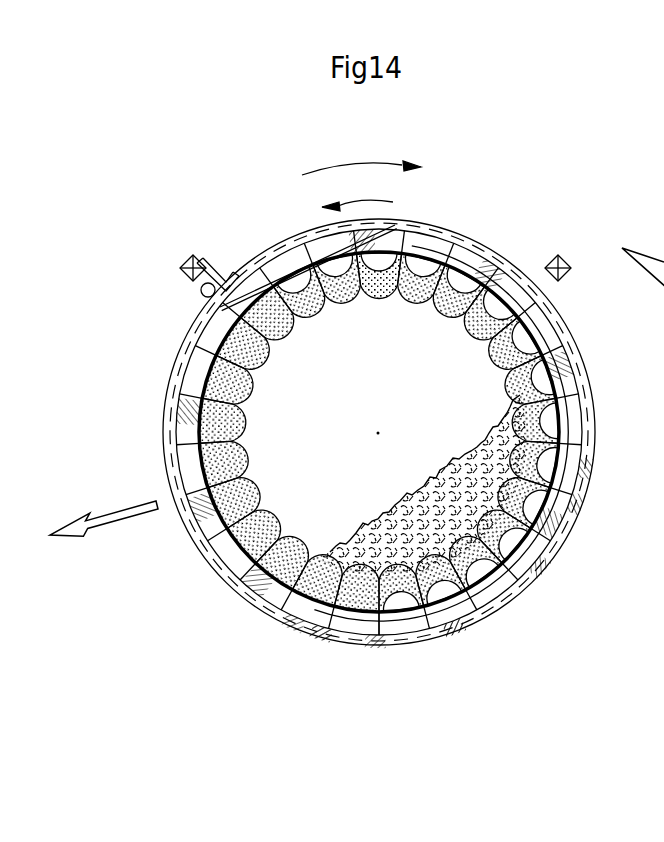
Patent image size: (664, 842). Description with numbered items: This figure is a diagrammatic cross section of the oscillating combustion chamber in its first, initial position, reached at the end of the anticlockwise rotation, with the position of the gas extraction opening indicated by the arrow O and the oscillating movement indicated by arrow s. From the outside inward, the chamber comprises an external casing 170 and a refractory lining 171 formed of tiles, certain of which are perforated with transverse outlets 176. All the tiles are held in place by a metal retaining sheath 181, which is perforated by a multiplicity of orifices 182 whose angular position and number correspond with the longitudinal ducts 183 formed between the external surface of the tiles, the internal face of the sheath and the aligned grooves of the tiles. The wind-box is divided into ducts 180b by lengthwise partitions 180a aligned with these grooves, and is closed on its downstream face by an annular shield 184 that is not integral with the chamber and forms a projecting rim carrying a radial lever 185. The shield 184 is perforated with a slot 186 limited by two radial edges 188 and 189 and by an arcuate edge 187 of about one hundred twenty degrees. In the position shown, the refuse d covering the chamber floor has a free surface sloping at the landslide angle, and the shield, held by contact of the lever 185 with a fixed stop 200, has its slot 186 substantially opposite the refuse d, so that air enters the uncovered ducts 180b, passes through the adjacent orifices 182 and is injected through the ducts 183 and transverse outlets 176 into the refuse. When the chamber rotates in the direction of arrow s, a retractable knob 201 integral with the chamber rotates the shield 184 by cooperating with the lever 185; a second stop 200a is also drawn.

The external casing 170 is at (272, 247).
The refractory lining 171 is at (485, 250).
The transverse outlets 176 is at (362, 637).
The lengthwise partitions 180a is at (437, 640).
The ducts of the wind-box 180b is at (503, 605).
The metal retaining sheath 181 is at (410, 252).
The orifices 182 is at (567, 483).
The longitudinal ducts 183 is at (503, 547).
The shield 184 is at (540, 328).
The radial lever 185 is at (213, 272).
The slot 186 is at (570, 472).
The arcuate edge 187 is at (562, 534).
The radial edge 188 is at (572, 372).
The radial edge 189 is at (315, 633).
The fixed stop 200 is at (184, 262).
The pivot 200a is at (564, 262).
The retractable knob 201 is at (200, 292).
The refuse d is at (480, 450).
The arrow indicating position of the opening O is at (132, 513).
The arrow of rotation direction s is at (361, 178).